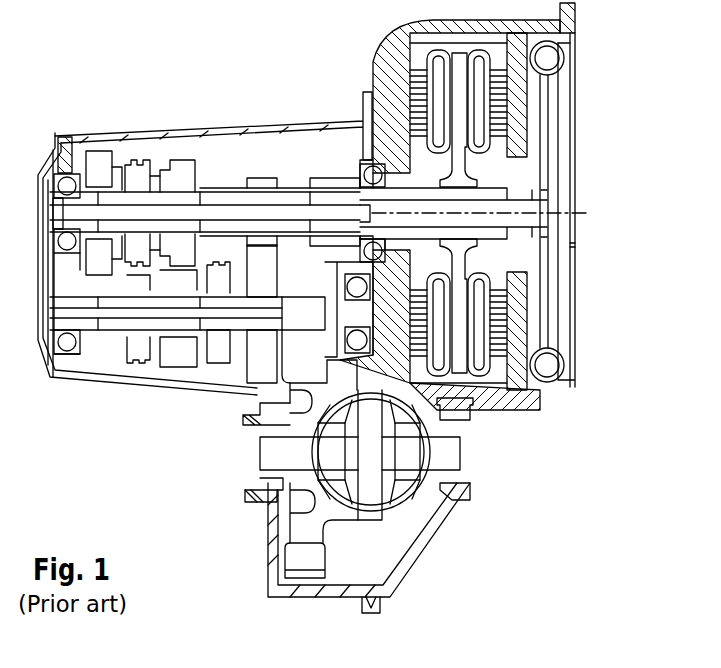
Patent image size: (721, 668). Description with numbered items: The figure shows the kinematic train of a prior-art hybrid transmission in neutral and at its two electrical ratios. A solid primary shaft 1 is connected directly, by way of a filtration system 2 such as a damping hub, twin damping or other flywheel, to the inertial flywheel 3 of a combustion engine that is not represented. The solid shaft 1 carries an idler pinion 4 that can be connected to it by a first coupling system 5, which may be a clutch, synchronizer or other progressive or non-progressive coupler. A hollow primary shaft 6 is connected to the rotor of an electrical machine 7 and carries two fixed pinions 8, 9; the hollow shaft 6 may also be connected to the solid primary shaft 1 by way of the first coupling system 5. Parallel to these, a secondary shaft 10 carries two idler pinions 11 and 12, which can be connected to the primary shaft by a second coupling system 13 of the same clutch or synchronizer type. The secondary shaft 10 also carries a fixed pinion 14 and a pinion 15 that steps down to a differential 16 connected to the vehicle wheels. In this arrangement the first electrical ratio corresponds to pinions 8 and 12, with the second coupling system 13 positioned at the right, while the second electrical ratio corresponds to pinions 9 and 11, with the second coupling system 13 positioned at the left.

The solid primary shaft 1 is at (513, 217).
The filtration system 2 is at (547, 123).
The inertial flywheel 3 is at (563, 105).
The idler pinion 4 is at (97, 153).
The first coupling system 5 is at (125, 163).
The hollow primary shaft 6 is at (323, 188).
The electrical machine 7 is at (457, 167).
The fixed pinion 8 is at (265, 178).
The fixed pinion 9 is at (180, 160).
The secondary shaft 10 is at (143, 327).
The idler pinion 11 is at (175, 363).
The idler pinion 12 is at (252, 365).
The second coupling system 13 is at (228, 362).
The fixed pinion 14 is at (100, 347).
The pinion 15 is at (297, 313).
The differential 16 is at (307, 345).